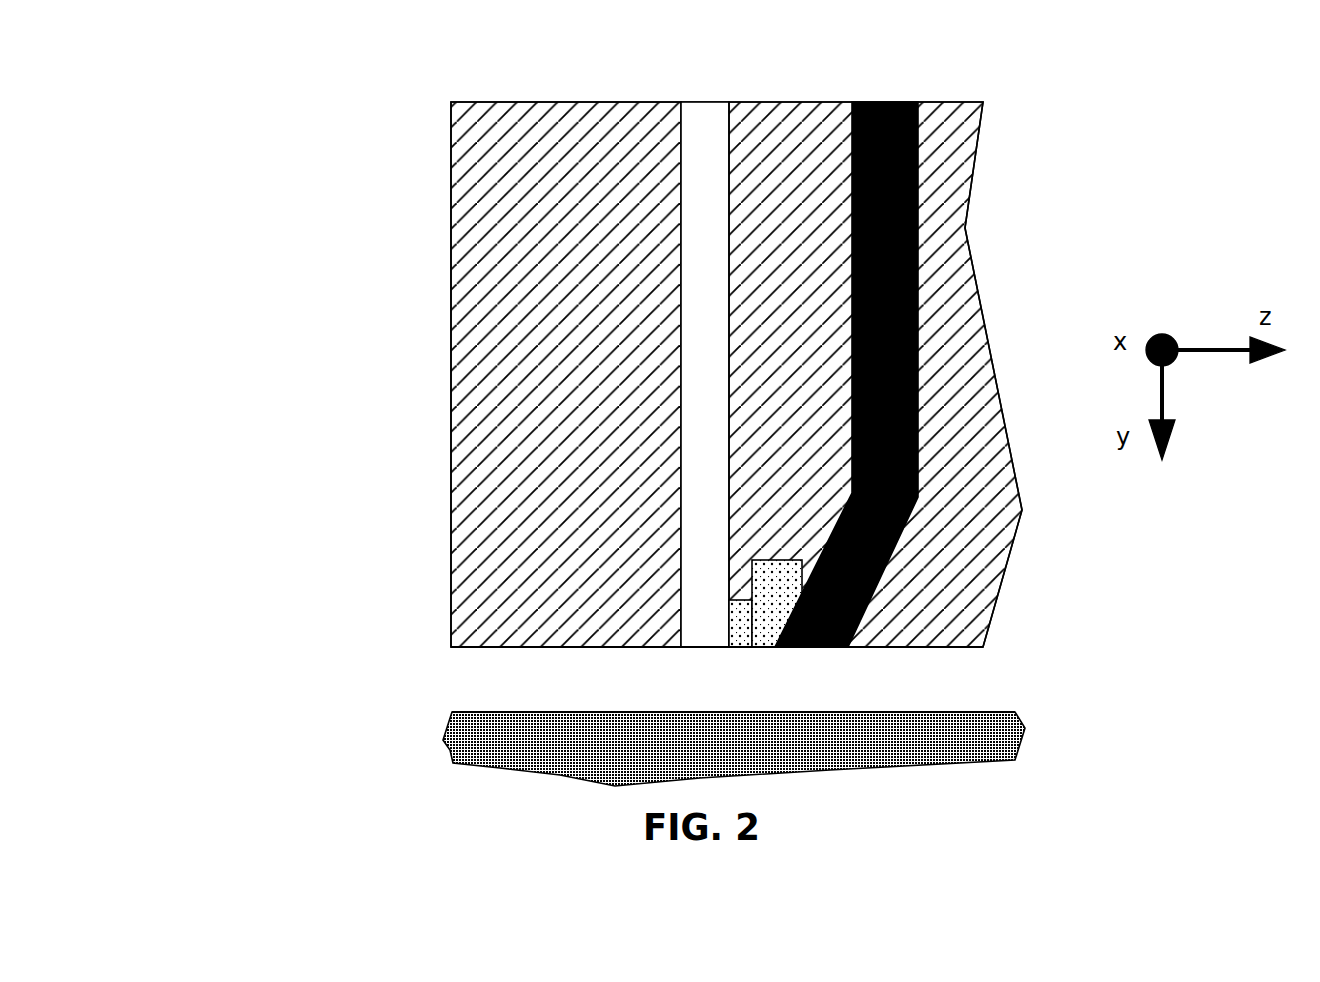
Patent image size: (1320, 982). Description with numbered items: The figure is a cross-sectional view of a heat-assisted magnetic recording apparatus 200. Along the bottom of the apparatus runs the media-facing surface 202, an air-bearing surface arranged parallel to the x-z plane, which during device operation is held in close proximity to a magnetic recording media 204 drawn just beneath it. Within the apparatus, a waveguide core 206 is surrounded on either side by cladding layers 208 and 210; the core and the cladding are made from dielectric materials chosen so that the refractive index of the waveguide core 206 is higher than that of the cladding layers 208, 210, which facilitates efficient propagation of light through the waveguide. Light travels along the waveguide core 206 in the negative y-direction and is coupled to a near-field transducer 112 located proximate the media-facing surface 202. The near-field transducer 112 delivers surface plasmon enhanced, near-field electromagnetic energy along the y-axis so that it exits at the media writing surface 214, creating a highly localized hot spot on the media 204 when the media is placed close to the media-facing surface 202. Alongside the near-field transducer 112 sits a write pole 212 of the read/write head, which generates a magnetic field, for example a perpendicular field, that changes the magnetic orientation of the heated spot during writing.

The HAMR apparatus 200 is at (308, 88).
The media-facing surface 202 is at (487, 648).
The magnetic recording media 204 is at (1005, 722).
The waveguide core 206 is at (691, 221).
The cladding layers 208 is at (453, 148).
The cladding layers 210 is at (780, 101).
The write pole 212 is at (882, 101).
The media writing surface 214 is at (943, 712).
The near-field transducer 112 is at (744, 648).